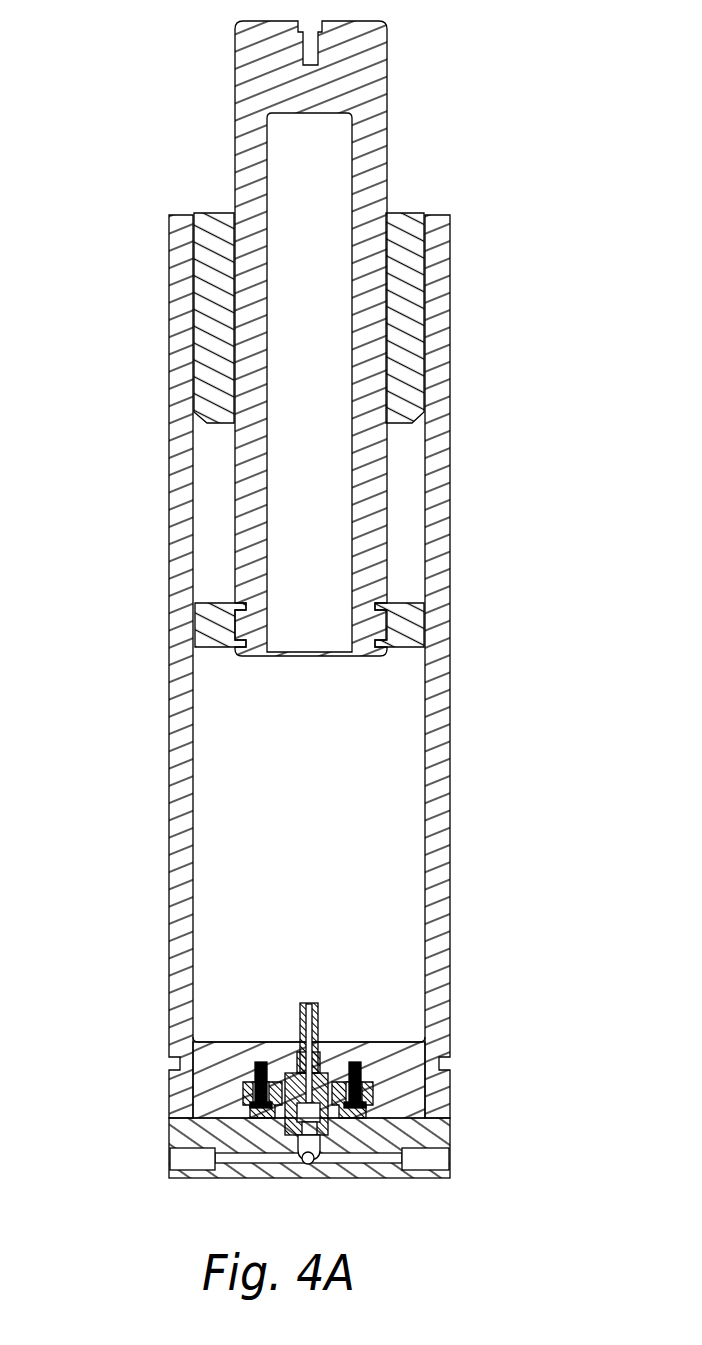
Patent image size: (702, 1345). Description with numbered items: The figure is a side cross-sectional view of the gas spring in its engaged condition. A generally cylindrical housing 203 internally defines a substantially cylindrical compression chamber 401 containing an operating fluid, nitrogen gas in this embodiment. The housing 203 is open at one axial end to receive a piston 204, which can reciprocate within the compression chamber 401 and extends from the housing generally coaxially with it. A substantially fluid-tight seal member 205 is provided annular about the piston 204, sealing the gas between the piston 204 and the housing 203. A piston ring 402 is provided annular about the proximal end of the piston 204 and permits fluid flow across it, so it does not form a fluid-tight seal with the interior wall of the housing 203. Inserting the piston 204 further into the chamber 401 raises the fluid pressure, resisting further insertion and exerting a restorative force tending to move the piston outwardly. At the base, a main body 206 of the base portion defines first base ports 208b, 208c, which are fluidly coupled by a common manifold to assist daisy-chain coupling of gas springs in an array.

The housing 203 is at (441, 818).
The piston 204 is at (373, 95).
The seal member 205 is at (405, 220).
The main body 206 is at (440, 1132).
The first base port 208b is at (180, 1158).
The first base port 208c is at (438, 1160).
The compression chamber 401 is at (330, 792).
The piston ring 402 is at (407, 630).